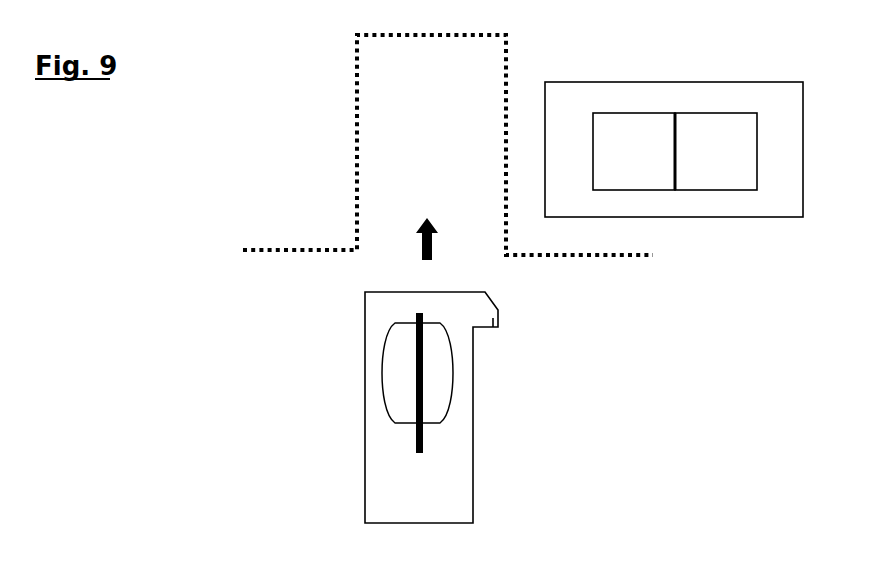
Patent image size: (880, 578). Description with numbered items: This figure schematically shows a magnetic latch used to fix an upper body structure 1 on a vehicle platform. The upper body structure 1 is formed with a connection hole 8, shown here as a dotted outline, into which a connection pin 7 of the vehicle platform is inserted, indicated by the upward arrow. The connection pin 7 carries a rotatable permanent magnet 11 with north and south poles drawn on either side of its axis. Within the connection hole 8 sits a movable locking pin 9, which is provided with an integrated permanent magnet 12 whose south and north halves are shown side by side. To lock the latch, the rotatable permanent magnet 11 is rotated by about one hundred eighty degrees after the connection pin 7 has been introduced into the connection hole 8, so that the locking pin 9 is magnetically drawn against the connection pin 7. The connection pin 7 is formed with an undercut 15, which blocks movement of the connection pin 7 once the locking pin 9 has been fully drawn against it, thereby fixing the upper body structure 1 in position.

The upper body structure 1 is at (298, 192).
The connection pin 7 is at (365, 318).
The connection hole 8 is at (484, 242).
The locking pin 9 is at (712, 82).
The rotatable permanent magnet 11 is at (382, 388).
The integrated permanent magnet 12 is at (728, 191).
The undercut 15 is at (493, 320).